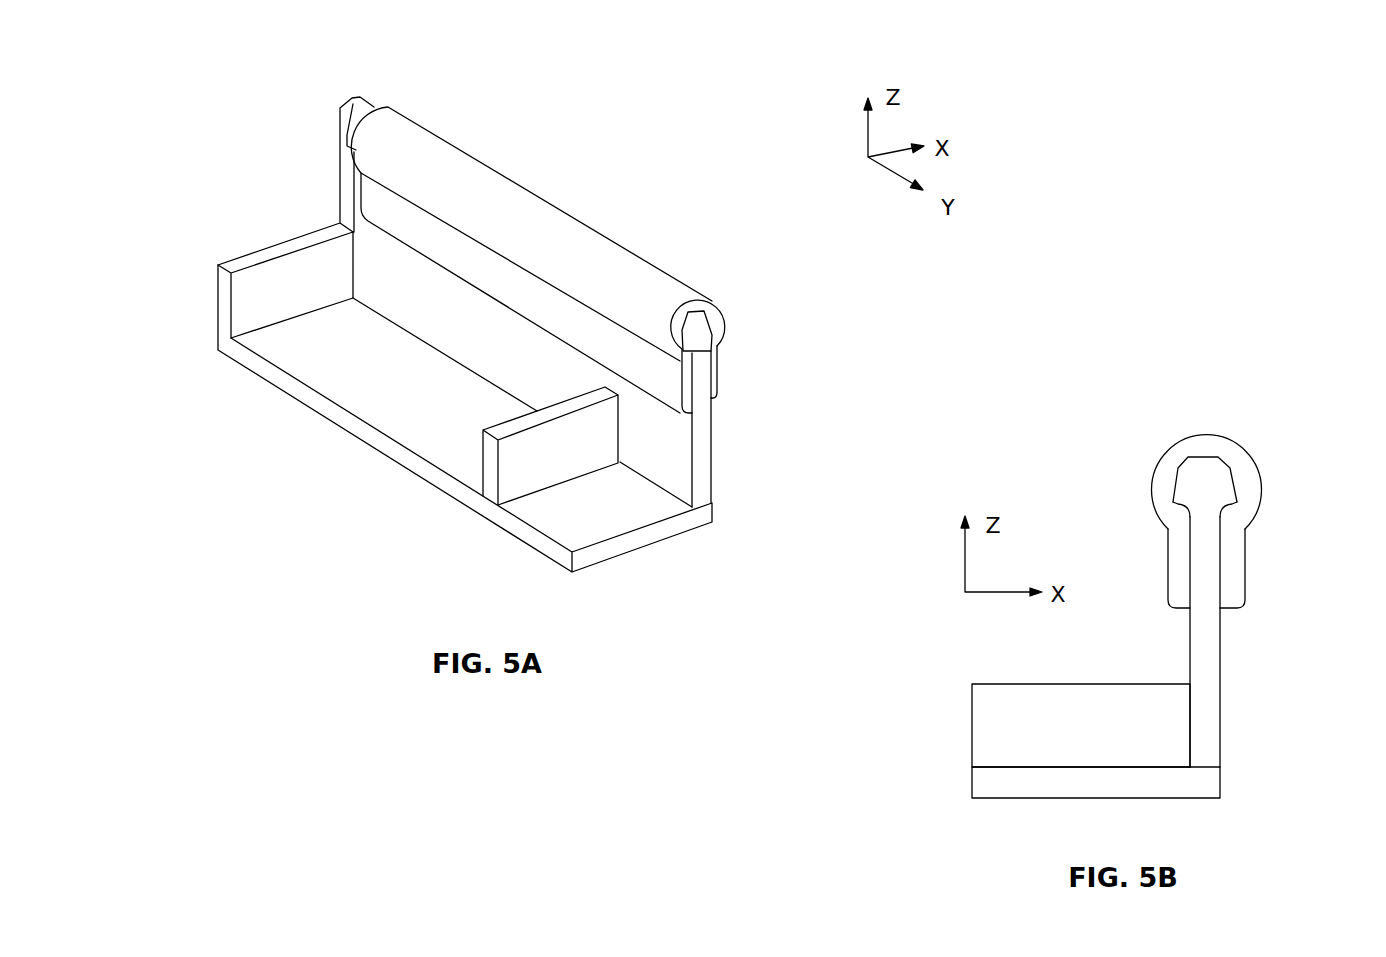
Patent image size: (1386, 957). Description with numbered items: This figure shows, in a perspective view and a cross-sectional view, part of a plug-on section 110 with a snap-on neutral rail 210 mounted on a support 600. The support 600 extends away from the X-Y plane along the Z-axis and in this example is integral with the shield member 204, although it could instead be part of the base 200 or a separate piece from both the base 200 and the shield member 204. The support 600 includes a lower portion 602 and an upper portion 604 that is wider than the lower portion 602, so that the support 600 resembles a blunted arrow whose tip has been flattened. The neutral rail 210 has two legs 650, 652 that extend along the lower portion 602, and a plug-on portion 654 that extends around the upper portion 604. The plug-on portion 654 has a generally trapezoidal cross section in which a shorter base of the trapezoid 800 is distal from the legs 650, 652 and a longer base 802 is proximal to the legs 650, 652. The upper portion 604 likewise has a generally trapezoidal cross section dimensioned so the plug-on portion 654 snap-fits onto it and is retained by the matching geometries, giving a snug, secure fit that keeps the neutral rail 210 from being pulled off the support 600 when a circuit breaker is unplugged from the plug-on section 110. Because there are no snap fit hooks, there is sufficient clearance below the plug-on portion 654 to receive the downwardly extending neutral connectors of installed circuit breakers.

In FIG. 5A, the plug-on section 110 is at (517, 318).
In FIG. 5A, the base 200 is at (267, 346).
In FIG. 5B, the base 200 is at (983, 781).
In FIG. 5A, the shield member 204 is at (347, 189).
In FIG. 5B, the shield member 204 is at (985, 720).
In FIG. 5A, the neutral rail 210 is at (428, 138).
In FIG. 5B, the neutral rail 210 is at (1241, 421).
In FIG. 5A, the support 600 is at (707, 466).
In FIG. 5B, the support 600 is at (1227, 548).
In FIG. 5B, the lower portion 602 is at (1205, 708).
In FIG. 5A, the upper portion 604 is at (702, 330).
In FIG. 5B, the upper portion 604 is at (1207, 478).
In FIG. 5A, the leg 650 is at (477, 255).
In FIG. 5B, the leg 650 is at (1173, 563).
In FIG. 5A, the leg 652 is at (716, 364).
In FIG. 5B, the leg 652 is at (1238, 590).
In FIG. 5A, the plug-on portion 654 is at (685, 300).
In FIG. 5B, the plug-on portion 654 is at (1210, 433).
In FIG. 5B, the shorter base of the trapezoid 800 is at (1200, 452).
In FIG. 5B, the longer base of the trapezoid 802 is at (1203, 517).